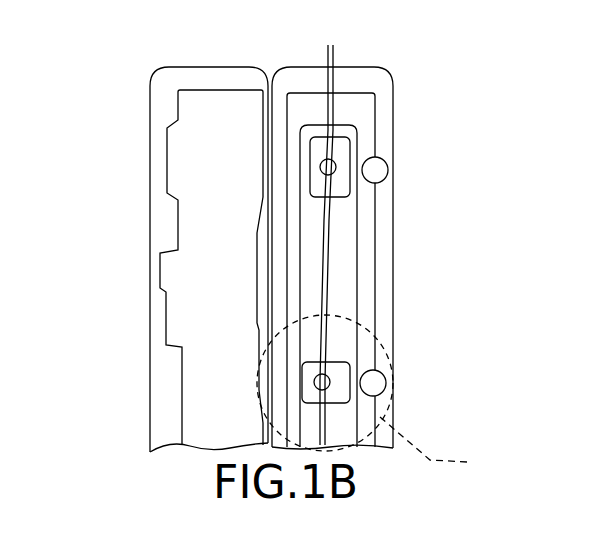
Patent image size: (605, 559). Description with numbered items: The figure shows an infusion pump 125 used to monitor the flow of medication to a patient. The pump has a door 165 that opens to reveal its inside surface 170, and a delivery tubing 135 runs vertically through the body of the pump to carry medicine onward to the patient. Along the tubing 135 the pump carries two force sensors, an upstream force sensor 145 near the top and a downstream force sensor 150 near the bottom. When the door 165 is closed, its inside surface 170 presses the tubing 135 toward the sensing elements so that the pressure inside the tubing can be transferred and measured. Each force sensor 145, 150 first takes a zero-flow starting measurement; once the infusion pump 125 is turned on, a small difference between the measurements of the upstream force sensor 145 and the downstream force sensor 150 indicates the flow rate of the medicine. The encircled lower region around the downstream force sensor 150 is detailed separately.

The infusion pump 125 is at (88, 138).
The door 165 is at (207, 67).
The inside surface 170 is at (236, 198).
The delivery tubing 135 is at (332, 122).
The upstream force sensor 145 is at (342, 152).
The downstream force sensor 150 is at (337, 377).